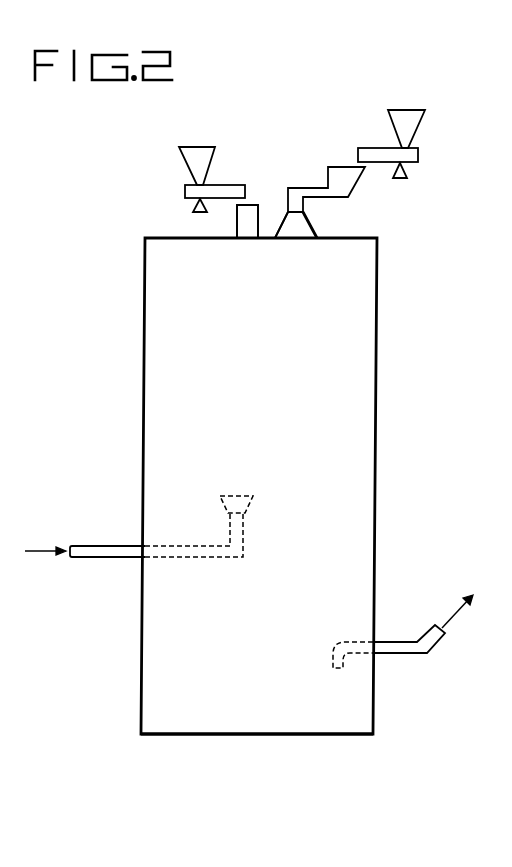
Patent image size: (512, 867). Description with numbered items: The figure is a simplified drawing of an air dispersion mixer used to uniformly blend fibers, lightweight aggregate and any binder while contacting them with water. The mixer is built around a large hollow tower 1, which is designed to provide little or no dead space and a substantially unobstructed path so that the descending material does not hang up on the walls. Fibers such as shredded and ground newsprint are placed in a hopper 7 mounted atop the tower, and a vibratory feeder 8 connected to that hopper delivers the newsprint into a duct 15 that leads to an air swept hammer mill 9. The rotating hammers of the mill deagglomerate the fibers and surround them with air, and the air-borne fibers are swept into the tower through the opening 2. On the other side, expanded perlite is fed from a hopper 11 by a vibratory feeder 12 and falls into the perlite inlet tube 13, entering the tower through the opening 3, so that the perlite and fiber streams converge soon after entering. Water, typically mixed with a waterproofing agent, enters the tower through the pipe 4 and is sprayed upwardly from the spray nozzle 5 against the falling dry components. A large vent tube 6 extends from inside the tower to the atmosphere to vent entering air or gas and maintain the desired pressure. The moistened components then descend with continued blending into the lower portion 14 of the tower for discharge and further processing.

The hollow tower 1 is at (145, 390).
The opening 2 is at (297, 243).
The opening 3 is at (245, 240).
The pipe 4 is at (112, 557).
The spray nozzle 5 is at (253, 500).
The vent tube 6 is at (430, 650).
The hopper 7 is at (423, 122).
The vibratory feeder 8 is at (418, 155).
The air swept hammer mill 9 is at (305, 225).
The hopper 11 is at (178, 152).
The vibratory feeder 12 is at (225, 190).
The perlite inlet tube 13 is at (237, 218).
The lower portion 14 is at (257, 723).
The duct 15 is at (355, 183).